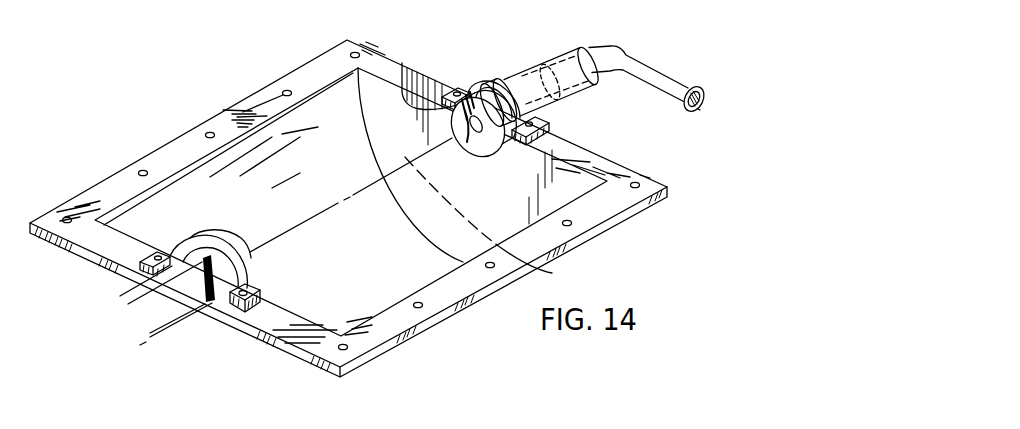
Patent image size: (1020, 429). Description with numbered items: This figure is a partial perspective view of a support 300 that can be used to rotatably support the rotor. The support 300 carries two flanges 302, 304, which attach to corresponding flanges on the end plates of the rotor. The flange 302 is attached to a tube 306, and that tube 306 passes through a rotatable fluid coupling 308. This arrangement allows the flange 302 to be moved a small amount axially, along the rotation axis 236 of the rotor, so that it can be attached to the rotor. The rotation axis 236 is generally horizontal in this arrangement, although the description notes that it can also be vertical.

The support 300 is at (660, 204).
The rotation axis 236 is at (562, 268).
The flange 302 is at (455, 127).
The flange 304 is at (245, 237).
The tube 306 is at (528, 72).
The rotatable fluid coupling 308 is at (560, 50).